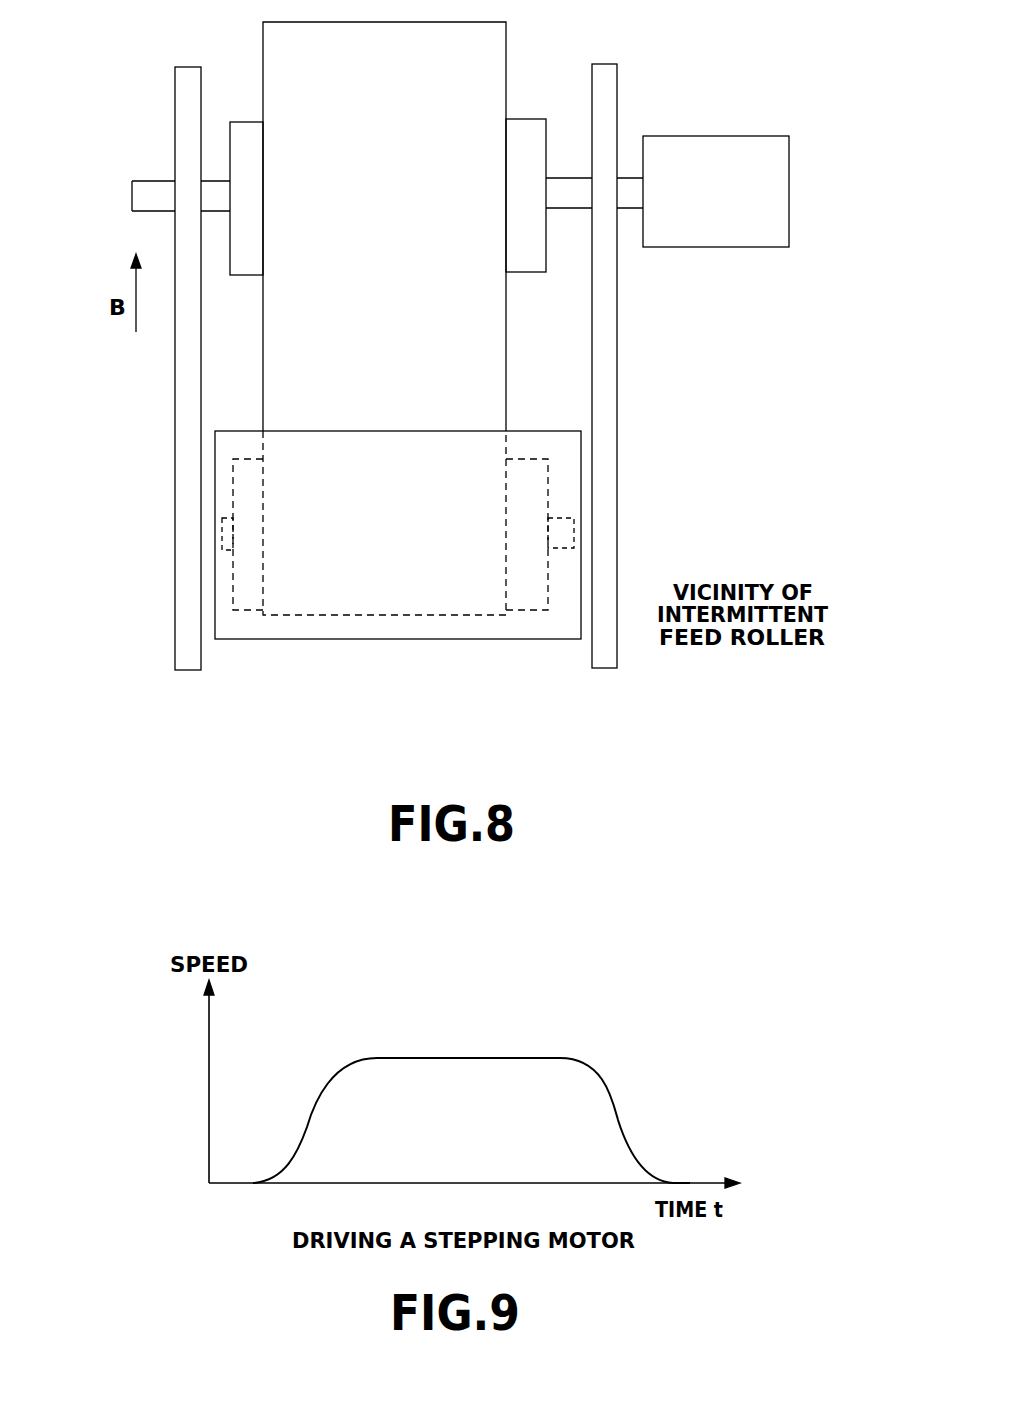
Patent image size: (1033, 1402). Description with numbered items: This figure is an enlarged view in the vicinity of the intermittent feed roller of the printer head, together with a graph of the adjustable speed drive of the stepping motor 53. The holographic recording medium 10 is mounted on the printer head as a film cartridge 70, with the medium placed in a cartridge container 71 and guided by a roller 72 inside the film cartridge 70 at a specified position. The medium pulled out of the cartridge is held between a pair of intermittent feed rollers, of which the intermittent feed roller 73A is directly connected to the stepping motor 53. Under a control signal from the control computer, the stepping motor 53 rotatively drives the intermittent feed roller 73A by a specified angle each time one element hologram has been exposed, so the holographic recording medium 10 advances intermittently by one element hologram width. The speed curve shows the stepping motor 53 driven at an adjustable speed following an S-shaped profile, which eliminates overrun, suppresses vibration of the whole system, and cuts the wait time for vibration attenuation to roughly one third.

The holographic recording medium 10 is at (506, 360).
The stepping motor 53 is at (705, 135).
The film cartridge 70 is at (398, 589).
The cartridge container 71 is at (458, 643).
The roller 72 is at (532, 607).
The intermittent feed roller 73A is at (527, 118).